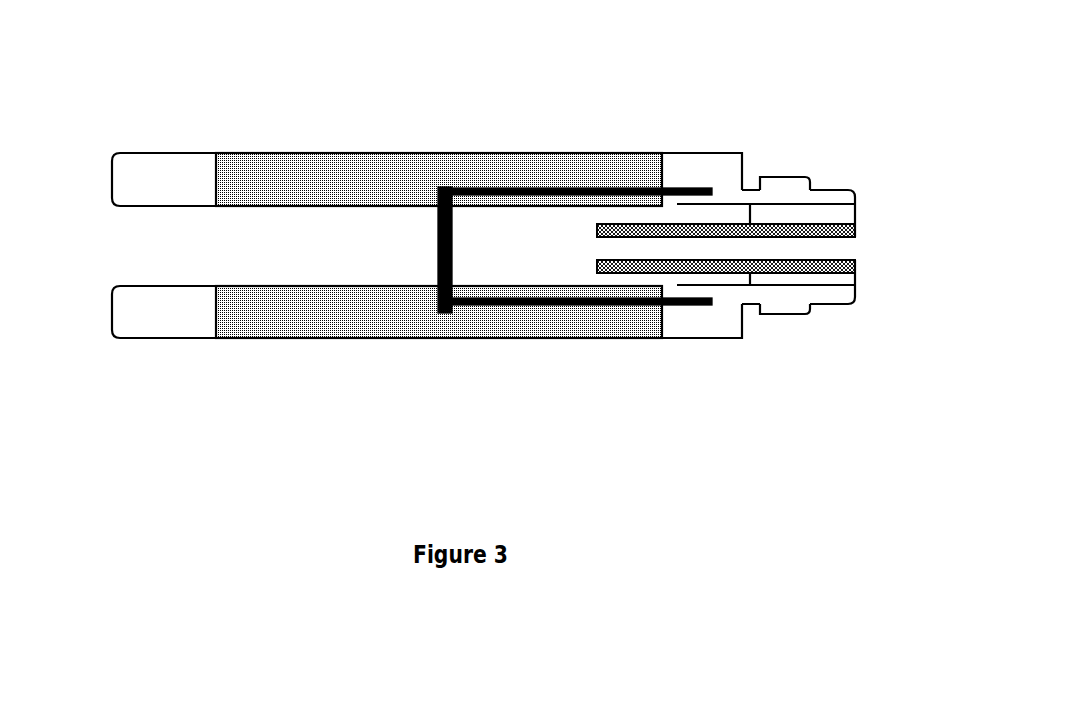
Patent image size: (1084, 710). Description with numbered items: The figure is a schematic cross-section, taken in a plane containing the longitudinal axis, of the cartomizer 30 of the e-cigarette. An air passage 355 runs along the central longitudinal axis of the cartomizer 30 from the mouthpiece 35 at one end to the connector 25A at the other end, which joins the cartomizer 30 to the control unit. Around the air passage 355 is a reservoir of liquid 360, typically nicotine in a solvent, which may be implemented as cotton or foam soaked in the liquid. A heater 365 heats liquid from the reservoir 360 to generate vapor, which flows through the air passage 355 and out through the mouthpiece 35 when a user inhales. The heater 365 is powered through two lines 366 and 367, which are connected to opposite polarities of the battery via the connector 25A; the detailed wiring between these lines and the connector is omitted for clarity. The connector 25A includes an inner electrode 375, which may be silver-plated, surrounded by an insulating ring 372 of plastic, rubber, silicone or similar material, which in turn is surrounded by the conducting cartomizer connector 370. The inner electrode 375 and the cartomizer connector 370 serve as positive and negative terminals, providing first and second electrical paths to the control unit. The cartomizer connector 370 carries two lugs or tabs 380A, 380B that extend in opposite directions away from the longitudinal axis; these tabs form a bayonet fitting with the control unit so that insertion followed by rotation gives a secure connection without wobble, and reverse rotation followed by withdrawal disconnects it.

The cartomizer 30 is at (479, 301).
The mouthpiece 35 is at (131, 290).
The air passage 355 is at (407, 195).
The reservoir of liquid 360 is at (439, 200).
The heater 365 is at (382, 175).
The line 366 is at (582, 121).
The line 367 is at (566, 352).
The cartomizer connector 370 is at (772, 161).
The insulating ring 372 is at (800, 169).
The inner electrode 375 is at (726, 352).
The lug or tab 380A is at (730, 145).
The lug or tab 380B is at (731, 363).
The connector 25A is at (902, 344).